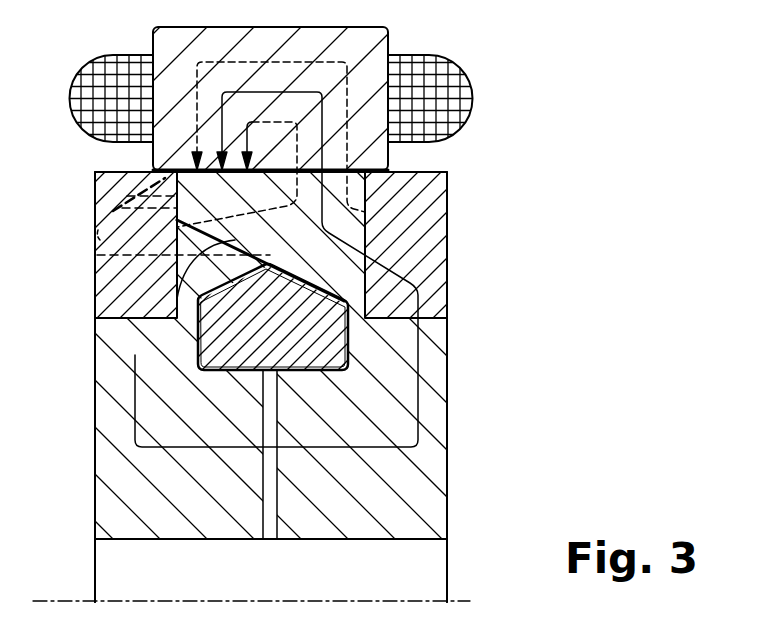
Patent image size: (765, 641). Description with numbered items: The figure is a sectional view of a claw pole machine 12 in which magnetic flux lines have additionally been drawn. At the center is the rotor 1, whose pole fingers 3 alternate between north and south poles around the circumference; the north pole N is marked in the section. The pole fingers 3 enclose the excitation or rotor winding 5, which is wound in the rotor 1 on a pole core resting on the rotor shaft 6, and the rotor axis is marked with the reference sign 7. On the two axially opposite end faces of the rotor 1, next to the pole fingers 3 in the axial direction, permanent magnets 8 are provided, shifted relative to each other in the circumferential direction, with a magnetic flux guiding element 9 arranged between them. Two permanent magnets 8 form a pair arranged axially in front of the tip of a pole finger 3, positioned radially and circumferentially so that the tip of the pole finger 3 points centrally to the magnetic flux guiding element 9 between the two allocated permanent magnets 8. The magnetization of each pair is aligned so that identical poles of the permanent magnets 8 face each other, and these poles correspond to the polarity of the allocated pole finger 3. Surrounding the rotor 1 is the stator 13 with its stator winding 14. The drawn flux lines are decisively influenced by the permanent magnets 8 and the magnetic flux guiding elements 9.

The rotor 1 is at (305, 387).
The pole finger 3 is at (190, 237).
The excitation or rotor winding 5 is at (330, 333).
The rotor shaft 6 is at (435, 565).
The rotor axis 7 is at (47, 600).
The permanent magnet 8 is at (100, 308).
The magnetic flux guiding element 9 is at (110, 266).
The claw pole machine 12 is at (392, 224).
The stator 13 is at (373, 45).
The stator winding 14 is at (462, 100).